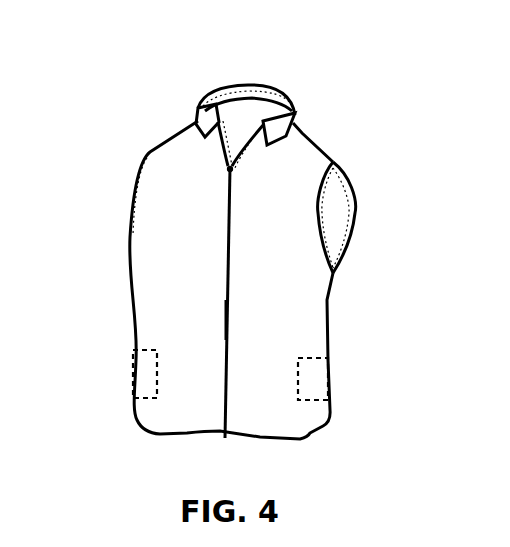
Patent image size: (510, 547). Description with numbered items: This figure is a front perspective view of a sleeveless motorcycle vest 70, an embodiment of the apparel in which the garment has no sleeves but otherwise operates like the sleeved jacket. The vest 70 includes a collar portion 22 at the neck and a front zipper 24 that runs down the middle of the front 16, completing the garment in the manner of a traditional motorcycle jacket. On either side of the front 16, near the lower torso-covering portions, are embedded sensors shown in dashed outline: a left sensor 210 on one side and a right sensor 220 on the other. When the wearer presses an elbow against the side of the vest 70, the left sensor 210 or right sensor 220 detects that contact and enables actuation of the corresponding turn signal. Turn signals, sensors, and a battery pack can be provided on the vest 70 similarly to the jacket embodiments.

The sleeveless vest 70 is at (120, 184).
The collar 22 is at (293, 118).
The front zipper 24 is at (233, 177).
The front 16 is at (209, 327).
The right sensor 220 is at (143, 372).
The left sensor 210 is at (317, 380).